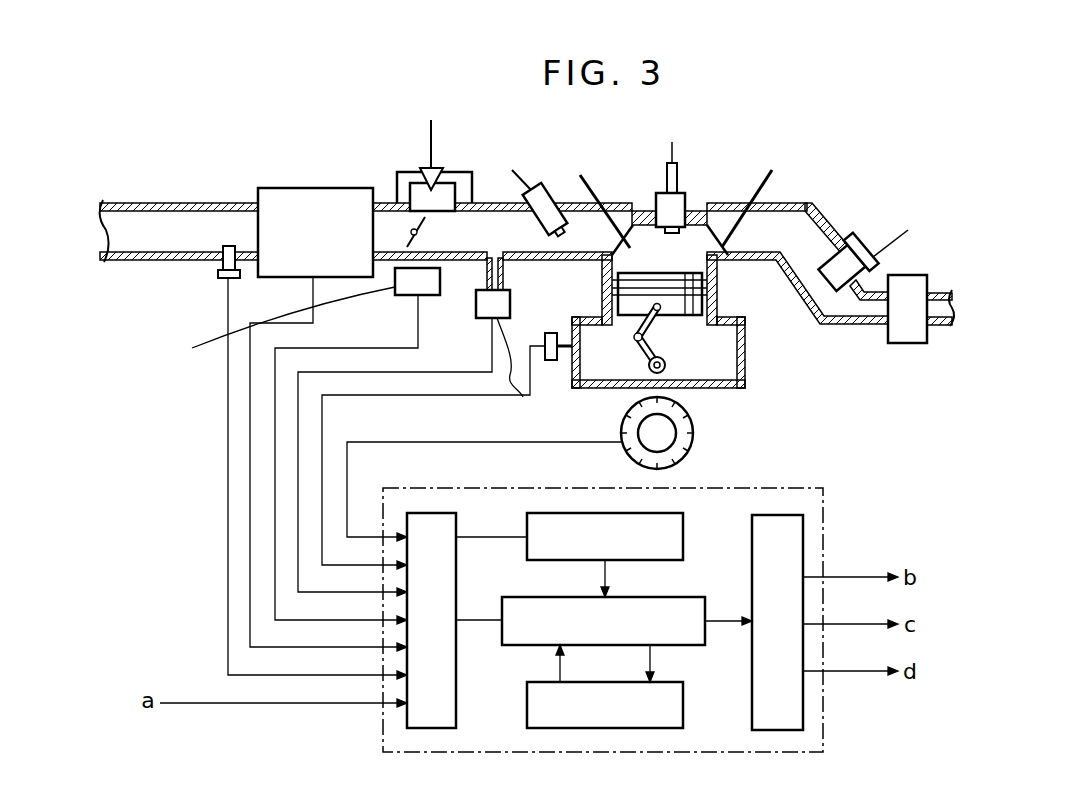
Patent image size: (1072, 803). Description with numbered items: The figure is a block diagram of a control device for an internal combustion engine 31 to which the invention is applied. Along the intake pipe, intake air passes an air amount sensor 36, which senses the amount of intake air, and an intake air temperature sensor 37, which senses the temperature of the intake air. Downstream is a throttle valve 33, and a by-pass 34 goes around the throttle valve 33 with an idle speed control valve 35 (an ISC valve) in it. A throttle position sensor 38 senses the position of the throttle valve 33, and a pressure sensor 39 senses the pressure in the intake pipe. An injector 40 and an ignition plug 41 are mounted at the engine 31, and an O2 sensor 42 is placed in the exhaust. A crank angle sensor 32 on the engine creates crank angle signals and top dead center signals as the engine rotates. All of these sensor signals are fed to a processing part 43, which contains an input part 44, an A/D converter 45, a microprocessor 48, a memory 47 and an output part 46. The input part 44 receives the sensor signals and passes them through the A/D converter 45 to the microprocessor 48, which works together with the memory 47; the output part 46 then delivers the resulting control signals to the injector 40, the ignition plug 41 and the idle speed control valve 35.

The internal combustion engine 31 is at (775, 360).
The crank angle sensor 32 is at (693, 433).
The throttle valve 33 is at (427, 219).
The by-pass 34 is at (458, 172).
The idle speed control valve 35 is at (423, 168).
The air amount sensor 36 is at (320, 188).
The intake air temperature sensor 37 is at (223, 264).
The throttle position sensor 38 is at (440, 291).
The pressure sensor 39 is at (510, 303).
The injector 40 is at (545, 182).
The ignition plug 41 is at (681, 180).
The O2 sensor 42 is at (846, 245).
The processing part 43 is at (835, 702).
The input part 44 is at (456, 597).
The A/D converter 45 is at (683, 540).
The output part 46 is at (803, 553).
The memory 47 is at (683, 706).
The microprocessor 48 is at (692, 597).